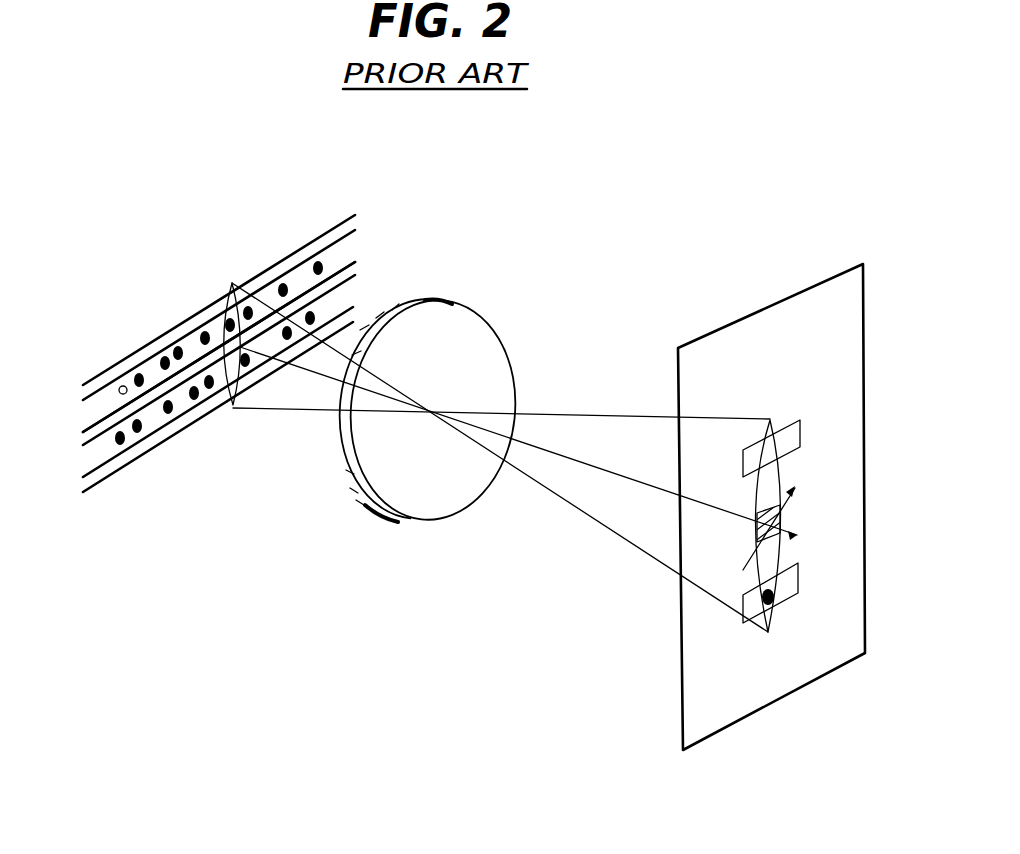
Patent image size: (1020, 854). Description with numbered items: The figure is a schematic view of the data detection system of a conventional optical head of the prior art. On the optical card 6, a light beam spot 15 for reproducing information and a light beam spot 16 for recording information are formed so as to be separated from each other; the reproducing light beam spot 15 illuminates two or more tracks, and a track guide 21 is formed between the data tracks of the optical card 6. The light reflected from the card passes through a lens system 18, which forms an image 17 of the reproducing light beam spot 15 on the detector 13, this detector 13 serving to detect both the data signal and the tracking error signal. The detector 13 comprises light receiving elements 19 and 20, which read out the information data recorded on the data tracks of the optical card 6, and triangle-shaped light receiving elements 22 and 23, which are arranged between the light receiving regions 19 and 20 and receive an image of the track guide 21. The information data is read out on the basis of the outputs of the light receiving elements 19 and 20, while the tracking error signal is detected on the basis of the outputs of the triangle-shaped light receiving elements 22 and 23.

The optical card 6 is at (181, 302).
The light beam spot for recording information 16 is at (122, 386).
The light beam spot for reproducing information 15 is at (232, 283).
The track guide 21 is at (350, 270).
The lens system 18 is at (483, 329).
The detector 13 is at (740, 318).
The image of the light beam spot 17 is at (770, 420).
The light receiving element 19 is at (800, 435).
The triangle-shaped light receiving element 22 is at (797, 490).
The triangle-shaped light receiving element 23 is at (797, 535).
The light receiving element 20 is at (798, 580).